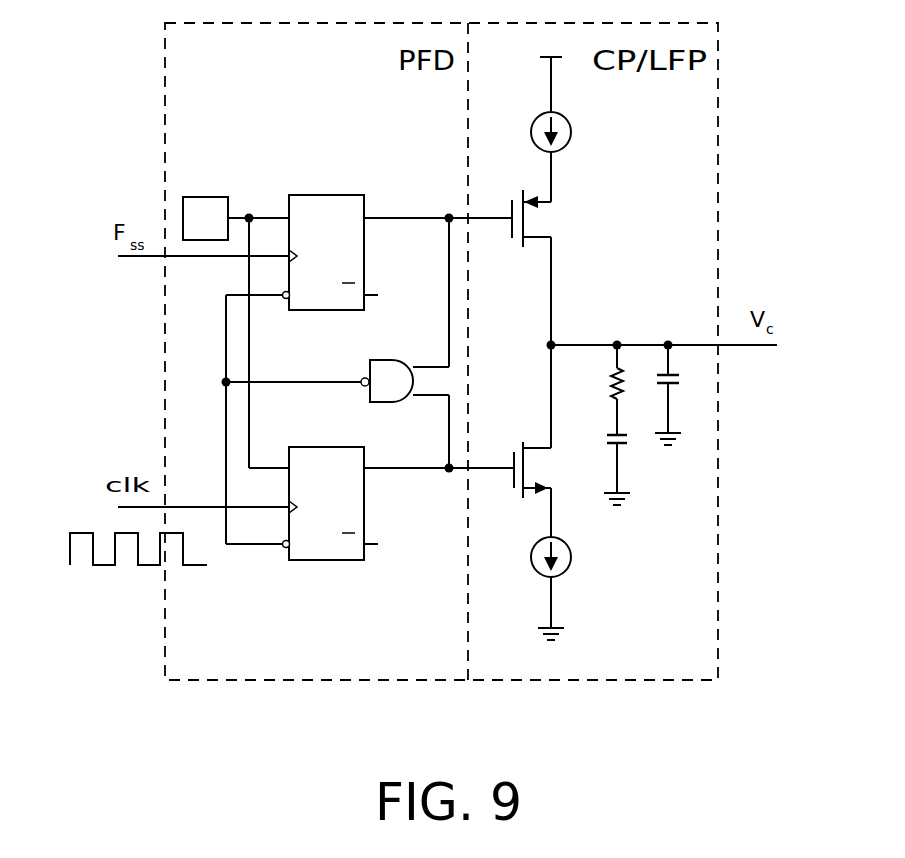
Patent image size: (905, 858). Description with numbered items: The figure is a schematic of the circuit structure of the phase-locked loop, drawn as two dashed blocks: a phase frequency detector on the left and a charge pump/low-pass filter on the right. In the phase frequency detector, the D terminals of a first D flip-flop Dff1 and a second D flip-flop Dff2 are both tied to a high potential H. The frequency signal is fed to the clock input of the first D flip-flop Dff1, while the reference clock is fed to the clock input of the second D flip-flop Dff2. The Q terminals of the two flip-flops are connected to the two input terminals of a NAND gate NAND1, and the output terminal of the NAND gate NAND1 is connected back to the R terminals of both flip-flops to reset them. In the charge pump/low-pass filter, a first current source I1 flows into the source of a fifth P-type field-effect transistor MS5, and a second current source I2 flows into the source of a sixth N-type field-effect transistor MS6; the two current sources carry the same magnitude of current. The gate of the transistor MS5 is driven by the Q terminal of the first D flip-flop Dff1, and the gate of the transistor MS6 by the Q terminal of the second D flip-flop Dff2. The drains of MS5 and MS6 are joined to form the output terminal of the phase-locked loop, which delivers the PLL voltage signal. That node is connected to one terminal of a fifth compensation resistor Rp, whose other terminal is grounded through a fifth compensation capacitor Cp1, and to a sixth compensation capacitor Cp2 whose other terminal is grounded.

The high potential H is at (205, 218).
The first D flip-flop Dff1 is at (324, 275).
The second D flip-flop Dff2 is at (324, 522).
The NAND gate NAND1 is at (396, 396).
The first current source I1 is at (544, 109).
The second current source I2 is at (544, 567).
The fifth P-type field-effect transistor MS5 is at (529, 236).
The sixth N-type field-effect transistor MS6 is at (525, 486).
The fifth compensation resistor Rp is at (600, 390).
The fifth compensation capacitor Cp1 is at (605, 470).
The sixth compensation capacitor Cp2 is at (684, 395).